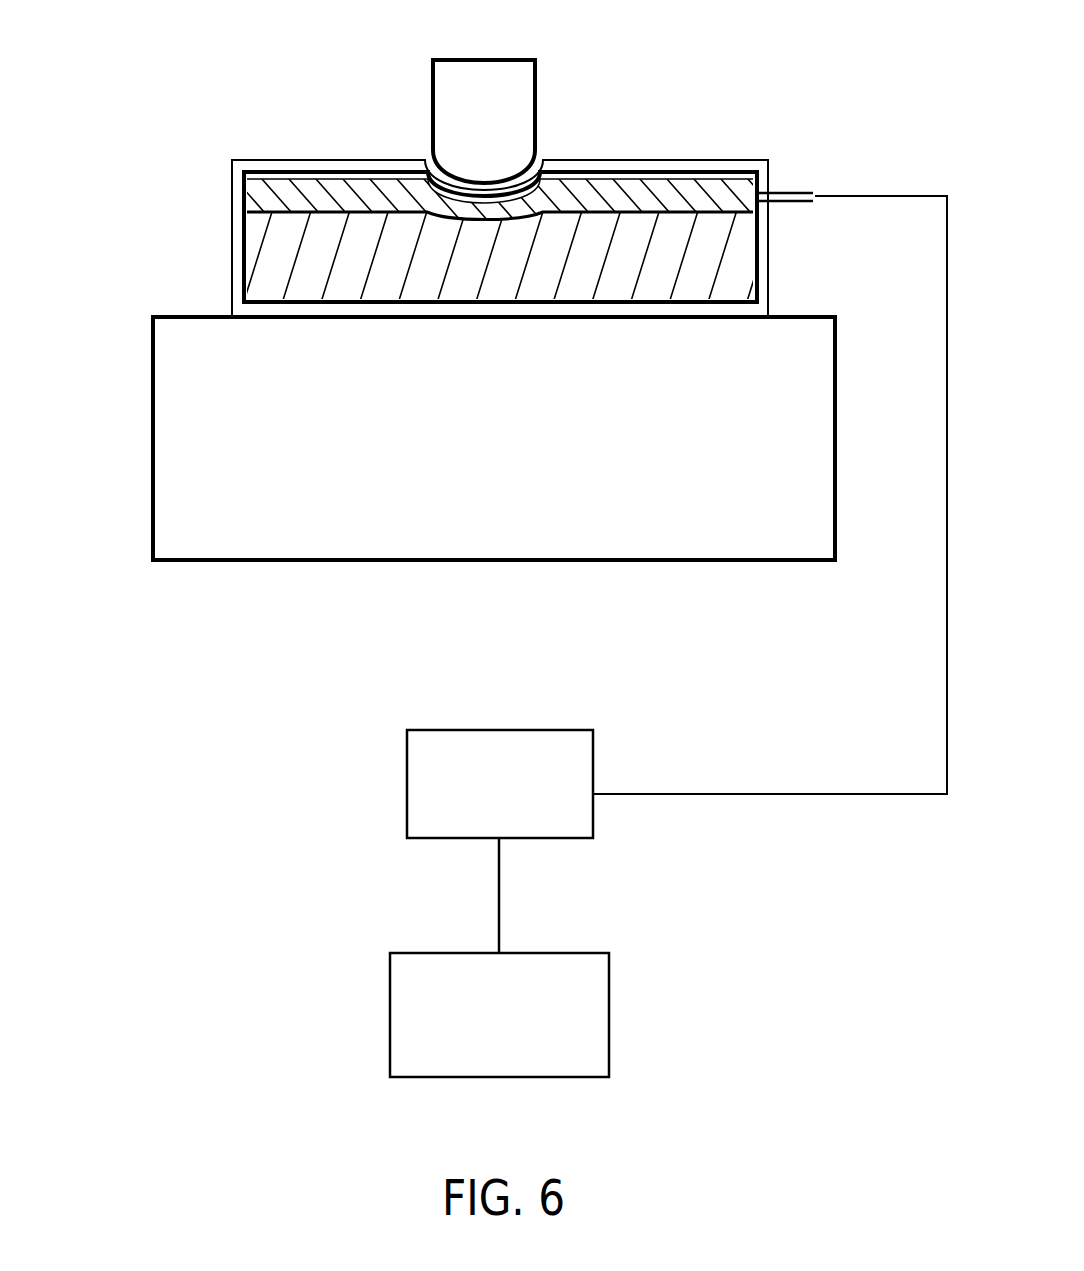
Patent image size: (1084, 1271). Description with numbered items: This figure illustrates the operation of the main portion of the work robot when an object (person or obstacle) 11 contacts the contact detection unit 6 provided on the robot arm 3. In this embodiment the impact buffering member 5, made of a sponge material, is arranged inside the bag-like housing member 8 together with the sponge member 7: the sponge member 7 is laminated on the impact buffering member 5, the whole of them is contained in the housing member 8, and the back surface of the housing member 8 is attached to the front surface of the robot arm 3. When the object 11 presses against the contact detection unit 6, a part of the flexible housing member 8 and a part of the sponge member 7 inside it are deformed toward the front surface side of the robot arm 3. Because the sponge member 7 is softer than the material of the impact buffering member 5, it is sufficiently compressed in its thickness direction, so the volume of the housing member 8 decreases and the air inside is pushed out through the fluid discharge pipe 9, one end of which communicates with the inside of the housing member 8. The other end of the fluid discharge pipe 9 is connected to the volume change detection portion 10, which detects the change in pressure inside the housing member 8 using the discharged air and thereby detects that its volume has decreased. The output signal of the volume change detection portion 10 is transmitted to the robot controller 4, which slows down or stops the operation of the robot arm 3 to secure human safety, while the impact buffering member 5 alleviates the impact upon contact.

The robot arm 3 is at (187, 428).
The robot controller 4 is at (390, 1002).
The impact buffering member 5 is at (270, 247).
The contact detection unit 6 is at (314, 146).
The sponge member 7 is at (275, 198).
The housing member 8 is at (728, 167).
The fluid discharge pipe 9 is at (793, 188).
The volume change detection portion 10 is at (405, 783).
The object 11 is at (535, 83).